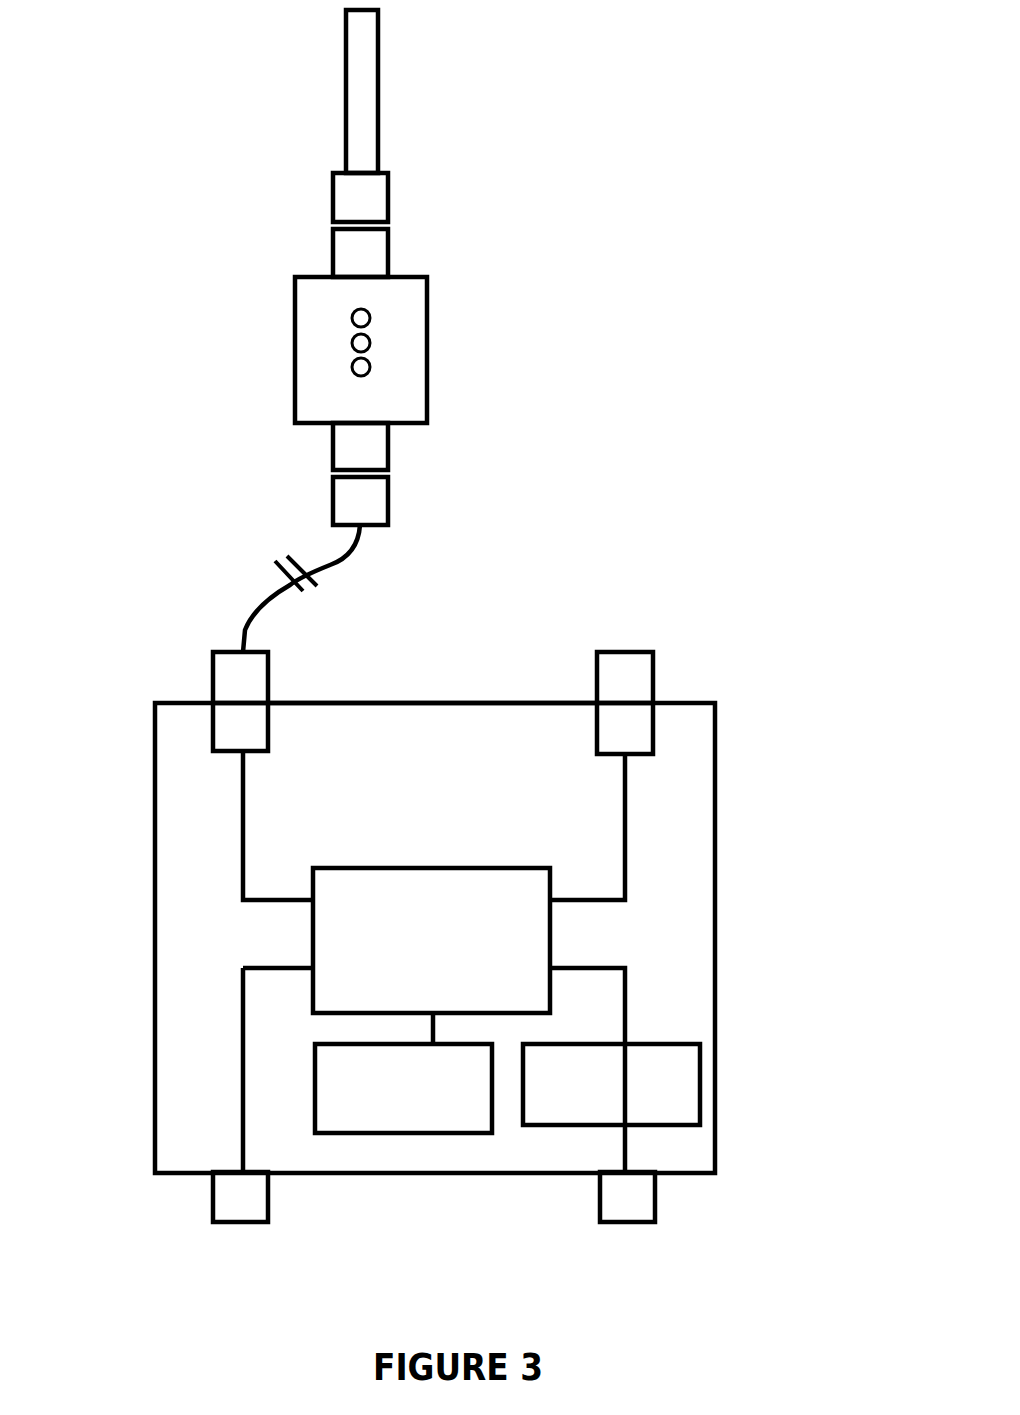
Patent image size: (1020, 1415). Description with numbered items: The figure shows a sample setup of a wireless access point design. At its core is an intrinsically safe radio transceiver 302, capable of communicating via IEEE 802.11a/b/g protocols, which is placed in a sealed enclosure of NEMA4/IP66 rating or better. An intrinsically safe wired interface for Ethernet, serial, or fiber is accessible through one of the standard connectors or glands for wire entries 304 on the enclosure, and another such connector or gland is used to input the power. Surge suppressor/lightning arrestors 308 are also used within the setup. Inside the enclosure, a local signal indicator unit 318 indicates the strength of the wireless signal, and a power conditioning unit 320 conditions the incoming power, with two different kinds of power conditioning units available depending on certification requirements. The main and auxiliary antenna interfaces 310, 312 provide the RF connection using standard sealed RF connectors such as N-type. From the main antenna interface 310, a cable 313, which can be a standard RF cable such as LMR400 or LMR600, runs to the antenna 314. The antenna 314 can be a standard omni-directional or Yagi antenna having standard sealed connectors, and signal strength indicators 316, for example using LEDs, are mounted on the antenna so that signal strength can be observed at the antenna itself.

The intrinsically safe radio transceiver 302 is at (407, 1006).
The connectors or glands for wire entries 304 is at (564, 1207).
The surge suppressor/lightning arrestors 308 is at (559, 742).
The main antenna interface 310 is at (268, 672).
The auxiliary antenna interface 312 is at (653, 655).
The cable 313 is at (256, 580).
The antenna 314 is at (378, 95).
The signal strength indicators 316 is at (427, 402).
The local signal indicator unit 318 is at (304, 256).
The power conditioning unit 320 is at (597, 1128).